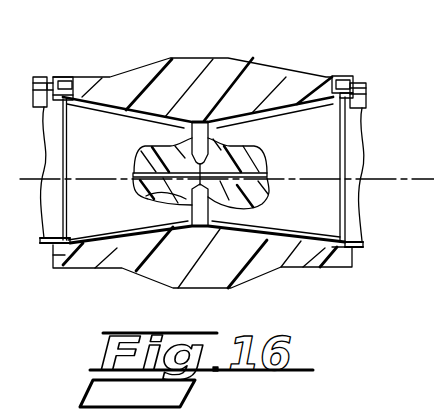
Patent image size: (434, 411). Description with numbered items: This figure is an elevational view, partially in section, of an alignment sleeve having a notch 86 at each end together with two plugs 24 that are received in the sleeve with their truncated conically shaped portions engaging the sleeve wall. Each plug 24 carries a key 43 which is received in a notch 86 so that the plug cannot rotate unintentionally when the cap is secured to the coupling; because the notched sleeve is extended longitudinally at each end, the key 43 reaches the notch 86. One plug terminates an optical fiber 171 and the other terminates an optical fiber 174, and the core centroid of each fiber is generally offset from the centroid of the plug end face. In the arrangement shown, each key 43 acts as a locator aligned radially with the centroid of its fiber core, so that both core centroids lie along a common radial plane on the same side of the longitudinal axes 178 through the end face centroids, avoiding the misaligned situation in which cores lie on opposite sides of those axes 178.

The plug 24 is at (108, 123).
The key 43 is at (43, 77).
The notch 86 is at (63, 75).
The optical fiber 171 is at (143, 147).
The optical fiber 174 is at (260, 209).
The longitudinal axis 178 is at (80, 190).